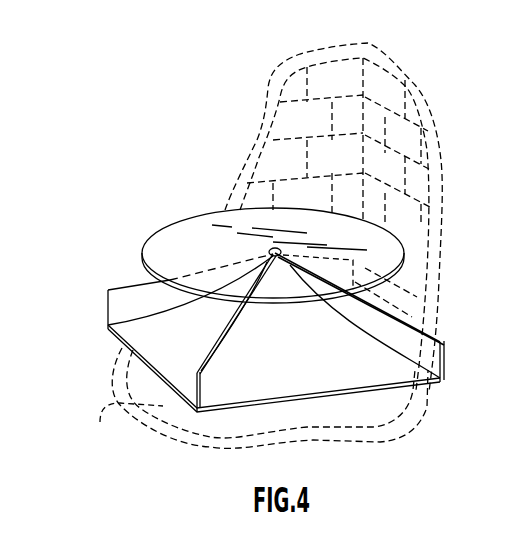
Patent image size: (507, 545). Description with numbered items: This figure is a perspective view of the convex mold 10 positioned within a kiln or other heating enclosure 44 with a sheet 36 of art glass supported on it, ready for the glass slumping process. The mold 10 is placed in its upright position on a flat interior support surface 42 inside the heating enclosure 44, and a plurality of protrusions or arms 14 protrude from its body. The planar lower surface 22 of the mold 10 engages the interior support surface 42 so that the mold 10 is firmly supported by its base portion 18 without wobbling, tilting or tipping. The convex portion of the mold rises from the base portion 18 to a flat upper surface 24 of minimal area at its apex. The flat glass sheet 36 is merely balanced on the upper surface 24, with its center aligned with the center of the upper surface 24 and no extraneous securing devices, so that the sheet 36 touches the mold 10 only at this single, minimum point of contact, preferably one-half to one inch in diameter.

The mold 10 is at (240, 409).
The arms 14 is at (131, 281).
The base portion 18 is at (146, 343).
The lower surface 22 is at (385, 390).
The upper surface 24 is at (278, 263).
The sheet 36 is at (170, 221).
The interior support surface 42 is at (130, 428).
The heating enclosure 44 is at (407, 69).